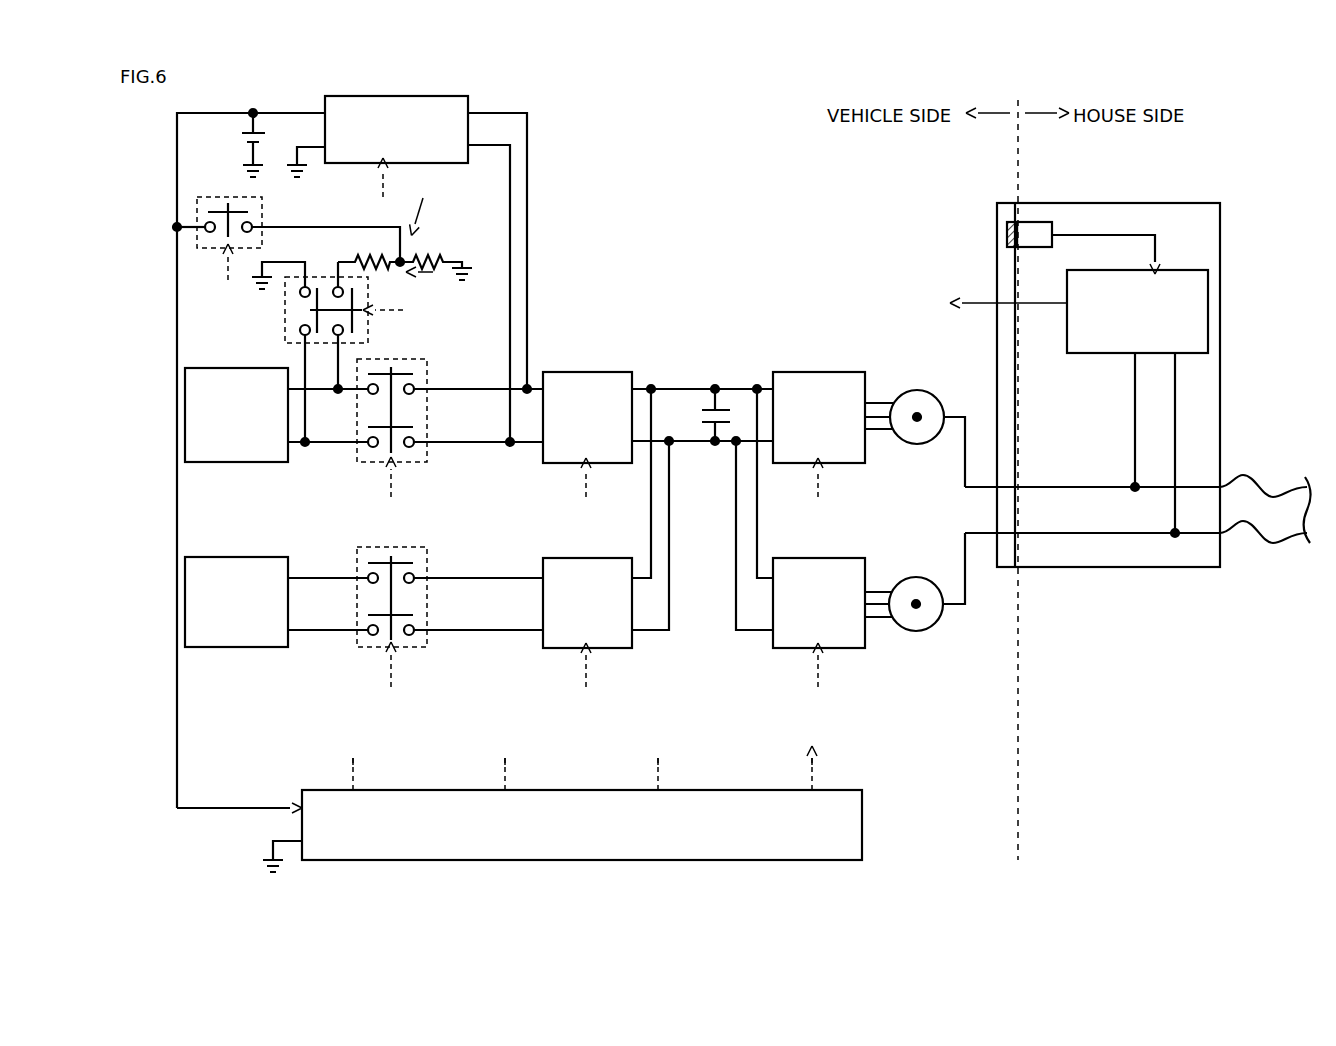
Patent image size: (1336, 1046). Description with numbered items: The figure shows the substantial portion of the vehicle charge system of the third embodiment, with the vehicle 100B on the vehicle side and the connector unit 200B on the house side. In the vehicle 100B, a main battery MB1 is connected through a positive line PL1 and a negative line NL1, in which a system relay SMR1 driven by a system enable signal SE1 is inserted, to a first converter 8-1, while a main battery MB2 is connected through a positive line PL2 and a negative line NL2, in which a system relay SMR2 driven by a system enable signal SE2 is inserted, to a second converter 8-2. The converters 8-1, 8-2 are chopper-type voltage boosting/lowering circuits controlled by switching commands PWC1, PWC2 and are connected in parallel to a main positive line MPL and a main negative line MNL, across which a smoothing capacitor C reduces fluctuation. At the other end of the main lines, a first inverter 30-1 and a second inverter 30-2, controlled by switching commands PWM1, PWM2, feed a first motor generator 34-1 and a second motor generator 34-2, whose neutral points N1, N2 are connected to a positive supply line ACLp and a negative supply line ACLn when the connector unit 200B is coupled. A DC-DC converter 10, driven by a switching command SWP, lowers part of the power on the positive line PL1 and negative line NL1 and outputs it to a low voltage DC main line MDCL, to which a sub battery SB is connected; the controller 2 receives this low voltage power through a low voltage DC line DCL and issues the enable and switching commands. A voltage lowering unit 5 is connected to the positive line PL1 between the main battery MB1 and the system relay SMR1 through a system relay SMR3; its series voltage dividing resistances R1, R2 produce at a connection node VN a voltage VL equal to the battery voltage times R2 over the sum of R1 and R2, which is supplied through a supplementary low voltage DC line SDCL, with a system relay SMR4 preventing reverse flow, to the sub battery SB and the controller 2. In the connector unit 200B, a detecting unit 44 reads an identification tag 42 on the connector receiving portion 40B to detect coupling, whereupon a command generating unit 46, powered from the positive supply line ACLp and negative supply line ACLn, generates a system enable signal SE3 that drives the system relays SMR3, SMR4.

The low voltage DC line DCL is at (177, 695).
The low voltage DC main line MDCL is at (205, 113).
The sub battery SB is at (240, 144).
The DC-DC converter 10 is at (423, 163).
The switching command SWP is at (382, 195).
The voltage lowering unit 5 is at (422, 201).
The system relay SMR4 is at (262, 210).
The supplementary low voltage DC line SDCL is at (272, 229).
The connection node VN is at (398, 258).
The voltage dividing resistance R1 is at (368, 257).
The voltage dividing resistance R2 is at (430, 248).
The voltage VL is at (431, 286).
The system enable signal SE3 is at (639, 288).
The system relay SMR3 is at (285, 321).
The main battery MB1 is at (235, 368).
The positive line PL1 is at (445, 389).
The negative line NL1 is at (445, 442).
The system relay SMR1 is at (400, 359).
The system enable signal SE1 is at (392, 495).
The main battery MB2 is at (235, 557).
The positive line PL2 is at (470, 578).
The negative line NL2 is at (470, 630).
The system relay SMR2 is at (400, 547).
The system enable signal SE2 is at (392, 680).
The first converter 8-1 is at (585, 372).
The second converter 8-2 is at (585, 558).
The switching command PWC1 is at (584, 496).
The switching command PWC2 is at (584, 680).
The main positive line MPL is at (677, 387).
The main negative line MNL is at (702, 444).
The smoothing capacitor C is at (700, 417).
The first inverter 30-1 is at (820, 372).
The second inverter 30-2 is at (820, 558).
The switching command PWM1 is at (820, 496).
The switching command PWM2 is at (820, 680).
The first motor generator 34-1 is at (933, 393).
The second motor generator 34-2 is at (932, 580).
The neutral point N1 is at (917, 419).
The neutral point N2 is at (916, 606).
The connector unit 200B is at (1143, 203).
The connector receiving portion 40B is at (1003, 203).
The identification tag 42 is at (1005, 235).
The detecting unit 44 is at (1042, 248).
The command generating unit 46 is at (1190, 270).
The positive supply line ACLp is at (1048, 487).
The negative supply line ACLn is at (1073, 535).
The vehicle 100B is at (760, 228).
The controller 2 is at (862, 825).